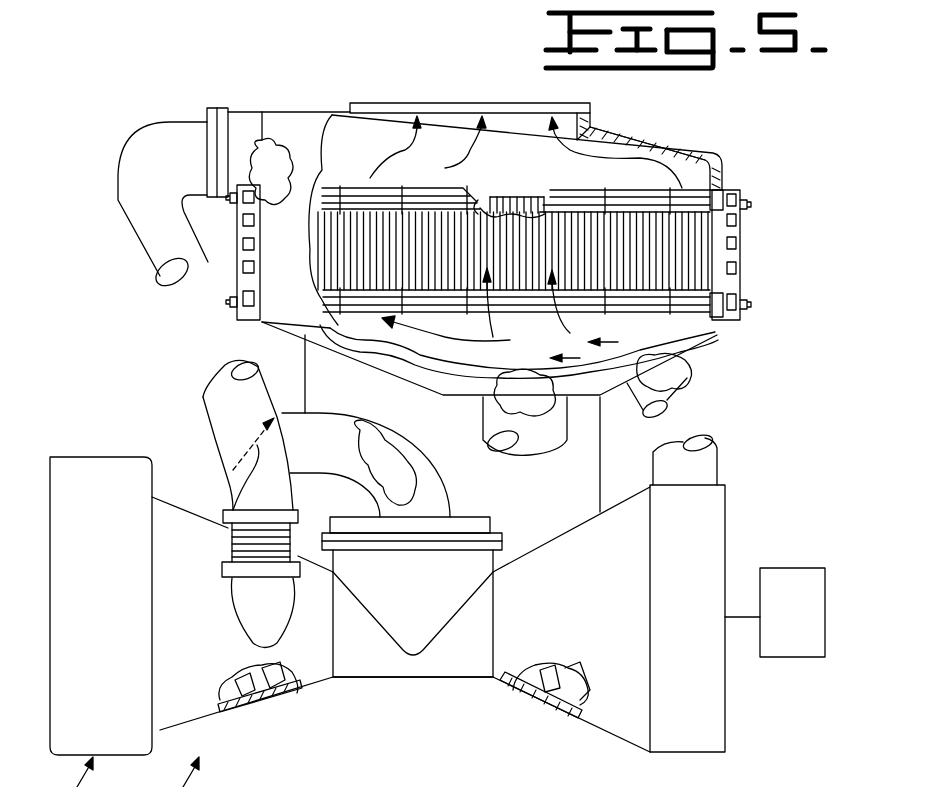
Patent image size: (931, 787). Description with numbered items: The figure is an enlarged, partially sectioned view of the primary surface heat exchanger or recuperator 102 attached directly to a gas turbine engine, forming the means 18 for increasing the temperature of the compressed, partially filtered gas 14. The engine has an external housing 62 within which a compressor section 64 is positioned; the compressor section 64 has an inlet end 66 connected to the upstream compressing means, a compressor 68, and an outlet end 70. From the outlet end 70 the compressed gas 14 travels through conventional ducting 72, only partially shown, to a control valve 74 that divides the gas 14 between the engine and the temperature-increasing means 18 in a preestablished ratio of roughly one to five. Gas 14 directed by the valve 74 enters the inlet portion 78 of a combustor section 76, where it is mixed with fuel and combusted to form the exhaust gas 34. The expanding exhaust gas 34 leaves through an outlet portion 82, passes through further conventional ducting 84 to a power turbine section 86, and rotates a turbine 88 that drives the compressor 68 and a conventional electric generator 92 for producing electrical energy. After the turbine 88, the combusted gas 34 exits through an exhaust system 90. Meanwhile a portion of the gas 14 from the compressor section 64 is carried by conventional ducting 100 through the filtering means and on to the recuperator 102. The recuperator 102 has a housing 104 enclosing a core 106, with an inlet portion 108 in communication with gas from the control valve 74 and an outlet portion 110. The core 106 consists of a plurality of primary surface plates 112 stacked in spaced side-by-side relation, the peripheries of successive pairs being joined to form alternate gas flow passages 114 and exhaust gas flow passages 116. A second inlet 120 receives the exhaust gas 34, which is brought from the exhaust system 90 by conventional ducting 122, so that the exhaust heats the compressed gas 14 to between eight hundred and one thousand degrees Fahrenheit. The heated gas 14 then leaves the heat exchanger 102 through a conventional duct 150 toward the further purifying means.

The gas 14 is at (272, 180).
The means for increasing the temperature of the partially filtered gas 18 is at (255, 73).
The exhaust gas 34 is at (713, 405).
The external housing 62 is at (268, 690).
The compressor section 64 is at (235, 698).
The inlet end 66 is at (50, 605).
The compressor 68 is at (288, 688).
The outlet end 70 is at (327, 640).
The conventional ducting 72 is at (213, 423).
The control valve 74 is at (230, 520).
The combustor section 76 is at (437, 678).
The inlet portion 78 is at (455, 517).
The outlet portion 82 is at (495, 583).
The conventional ducting 84 is at (473, 658).
The power turbine section 86 is at (613, 722).
The turbine 88 is at (577, 717).
The exhaust system 90 is at (717, 463).
The electric generator 92 is at (806, 620).
The conventional ducting 100 is at (132, 236).
The primary surface heat exchanger or recuperator 102 is at (742, 254).
The housing 104 is at (693, 150).
The core 106 is at (700, 263).
The inlet portion 108 is at (258, 148).
The outlet portion 110 is at (510, 398).
The primary surface plates 112 is at (497, 190).
The gas flow passages 114 is at (252, 180).
The exhaust gas flow passages 116 is at (532, 205).
The second inlet 120 is at (685, 363).
The conventional ducting 122 is at (690, 378).
The conventional duct 150 is at (603, 433).